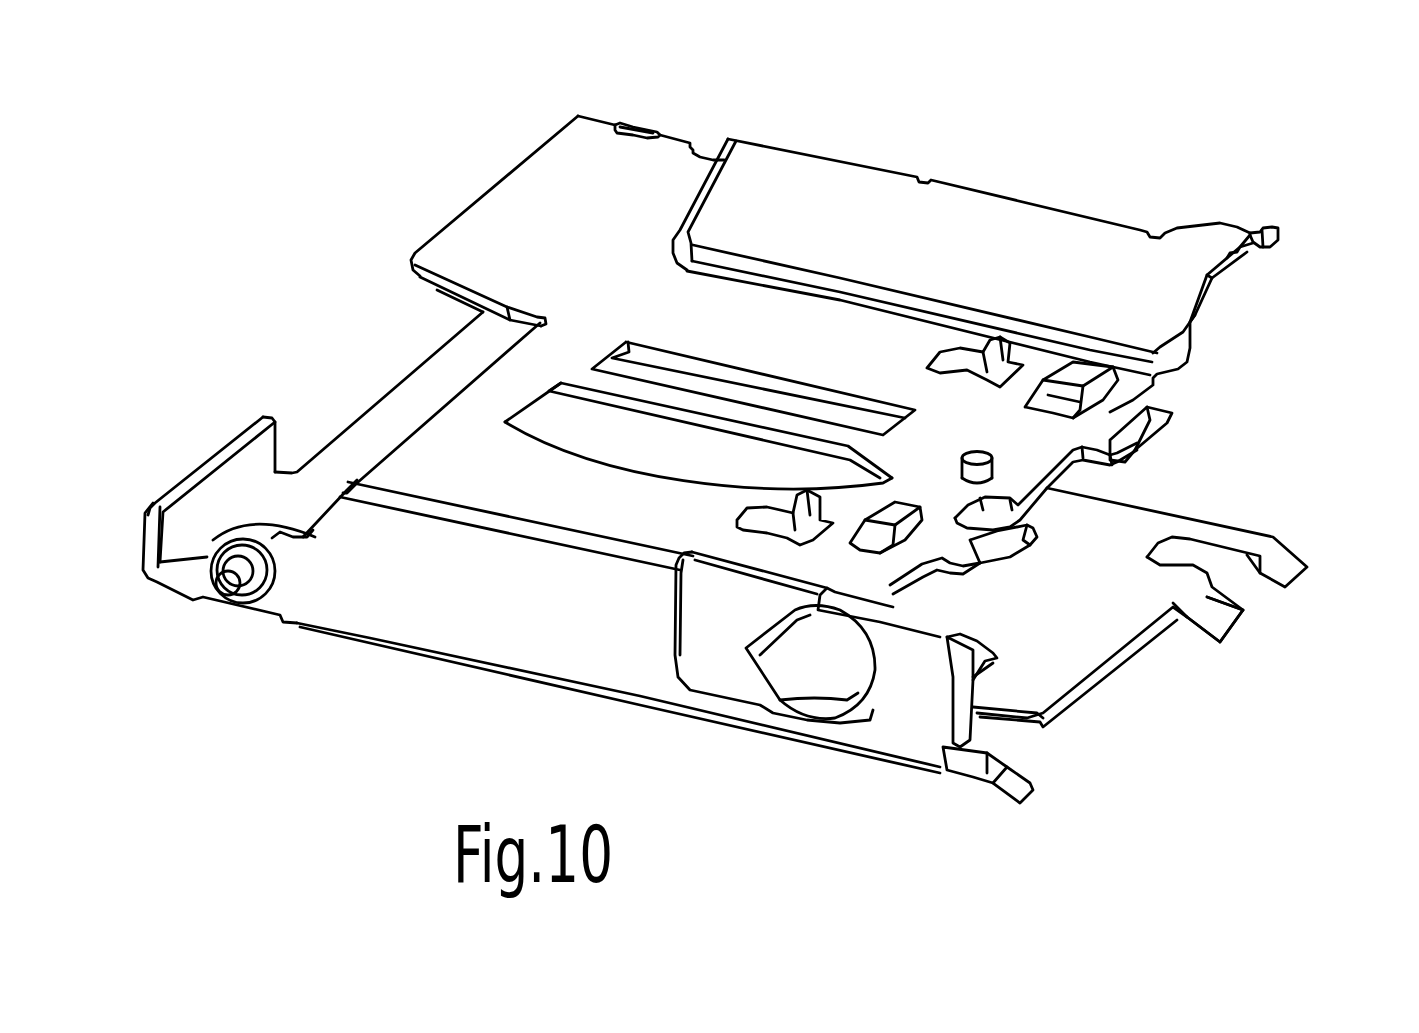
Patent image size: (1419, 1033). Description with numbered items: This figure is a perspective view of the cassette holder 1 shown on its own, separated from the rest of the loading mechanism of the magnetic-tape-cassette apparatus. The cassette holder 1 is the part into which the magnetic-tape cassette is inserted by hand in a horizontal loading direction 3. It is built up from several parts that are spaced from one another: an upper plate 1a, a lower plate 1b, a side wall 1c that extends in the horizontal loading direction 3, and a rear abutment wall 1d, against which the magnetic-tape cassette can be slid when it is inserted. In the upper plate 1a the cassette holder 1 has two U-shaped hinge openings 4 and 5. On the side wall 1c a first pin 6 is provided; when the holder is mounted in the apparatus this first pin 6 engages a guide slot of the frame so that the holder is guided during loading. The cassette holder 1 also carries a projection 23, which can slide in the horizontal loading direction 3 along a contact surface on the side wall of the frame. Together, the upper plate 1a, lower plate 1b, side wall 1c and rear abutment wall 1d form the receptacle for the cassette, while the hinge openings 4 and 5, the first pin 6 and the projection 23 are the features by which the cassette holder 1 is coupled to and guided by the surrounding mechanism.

The cassette holder 1 is at (773, 367).
The upper plate 1a is at (937, 237).
The lower plate 1b is at (1063, 643).
The side wall 1c is at (665, 642).
The rear abutment wall 1d is at (218, 483).
The horizontal loading direction 3 is at (1185, 724).
The U-shaped hinge opening 4 is at (1049, 364).
The U-shaped hinge opening 5 is at (852, 475).
The first pin 6 is at (243, 633).
The projection 23 is at (1278, 245).